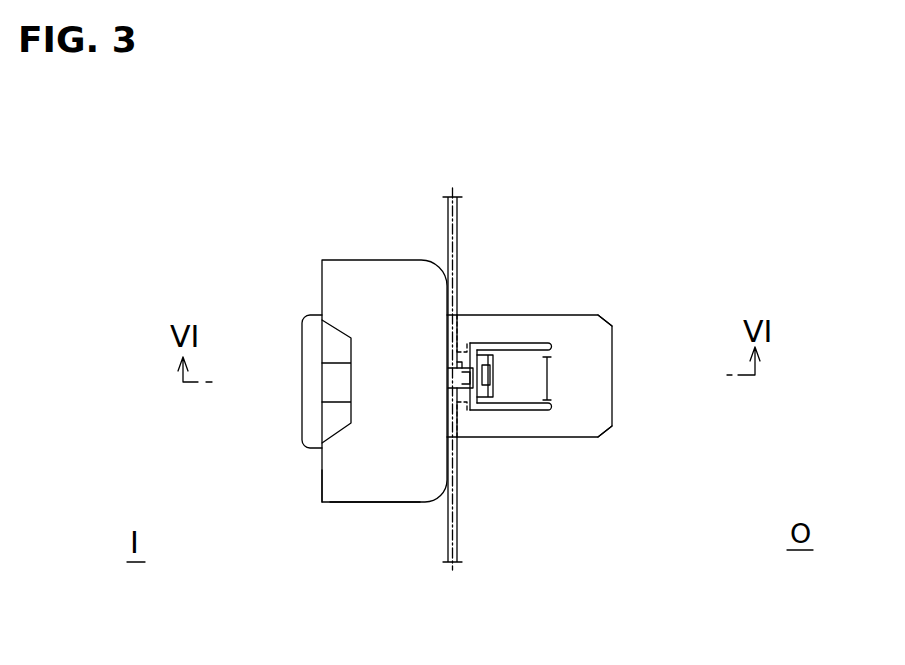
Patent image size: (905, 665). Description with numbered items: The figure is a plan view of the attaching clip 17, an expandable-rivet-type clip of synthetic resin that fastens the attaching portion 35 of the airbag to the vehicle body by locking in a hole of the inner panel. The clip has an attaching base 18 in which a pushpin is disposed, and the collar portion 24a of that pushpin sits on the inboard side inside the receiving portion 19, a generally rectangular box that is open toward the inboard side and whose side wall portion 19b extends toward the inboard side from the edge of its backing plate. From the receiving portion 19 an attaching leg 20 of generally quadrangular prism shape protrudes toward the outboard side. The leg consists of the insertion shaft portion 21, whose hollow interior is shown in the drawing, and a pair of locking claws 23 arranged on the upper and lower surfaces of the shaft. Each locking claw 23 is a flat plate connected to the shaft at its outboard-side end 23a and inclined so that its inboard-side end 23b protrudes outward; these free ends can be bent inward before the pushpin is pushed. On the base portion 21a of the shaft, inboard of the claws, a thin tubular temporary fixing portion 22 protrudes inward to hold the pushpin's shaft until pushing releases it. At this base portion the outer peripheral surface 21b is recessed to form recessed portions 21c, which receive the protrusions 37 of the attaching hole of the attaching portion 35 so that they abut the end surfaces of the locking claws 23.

The attaching clip 17 is at (578, 179).
The attaching base 18 is at (398, 528).
The receiving portion 19 is at (333, 257).
The side wall portion 19b is at (343, 492).
The attaching leg 20 is at (583, 460).
The insertion shaft portion 21 is at (575, 323).
The base portion 21a is at (462, 418).
The outer peripheral surface 21b is at (497, 326).
The recessed portions 21c is at (445, 361).
The temporary fixing portion 22 is at (465, 393).
The locking claws 23 is at (535, 425).
The outboard-side ends 23a is at (540, 372).
The inboard-side ends 23b is at (500, 400).
The collar portion 24a is at (312, 432).
The attaching portion 35 is at (455, 226).
The protrusions 37 is at (470, 382).